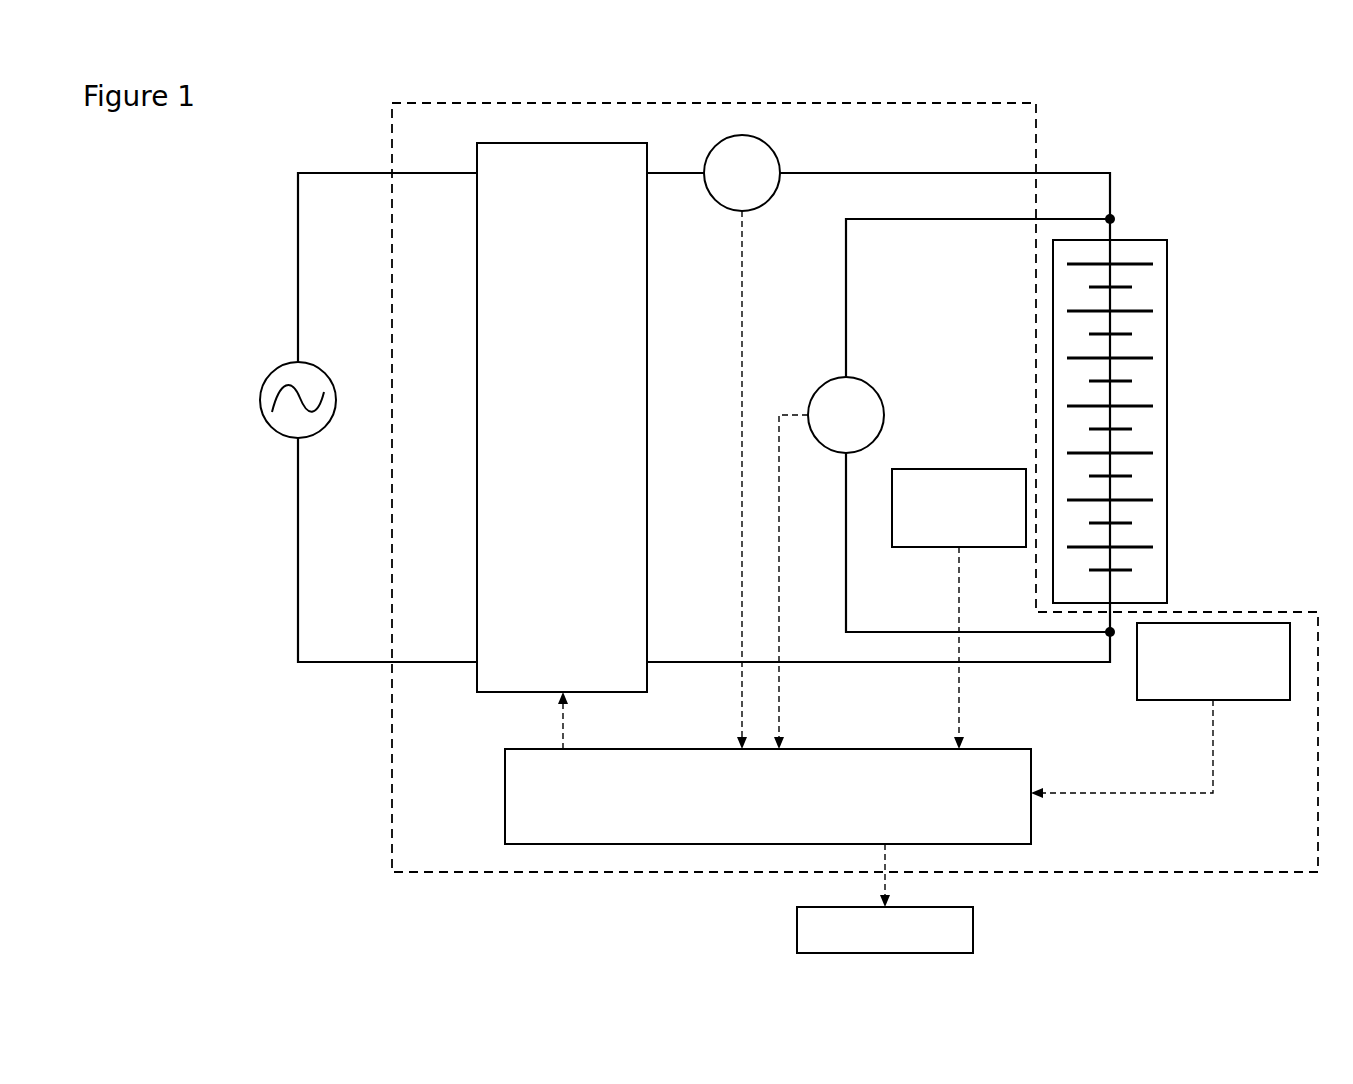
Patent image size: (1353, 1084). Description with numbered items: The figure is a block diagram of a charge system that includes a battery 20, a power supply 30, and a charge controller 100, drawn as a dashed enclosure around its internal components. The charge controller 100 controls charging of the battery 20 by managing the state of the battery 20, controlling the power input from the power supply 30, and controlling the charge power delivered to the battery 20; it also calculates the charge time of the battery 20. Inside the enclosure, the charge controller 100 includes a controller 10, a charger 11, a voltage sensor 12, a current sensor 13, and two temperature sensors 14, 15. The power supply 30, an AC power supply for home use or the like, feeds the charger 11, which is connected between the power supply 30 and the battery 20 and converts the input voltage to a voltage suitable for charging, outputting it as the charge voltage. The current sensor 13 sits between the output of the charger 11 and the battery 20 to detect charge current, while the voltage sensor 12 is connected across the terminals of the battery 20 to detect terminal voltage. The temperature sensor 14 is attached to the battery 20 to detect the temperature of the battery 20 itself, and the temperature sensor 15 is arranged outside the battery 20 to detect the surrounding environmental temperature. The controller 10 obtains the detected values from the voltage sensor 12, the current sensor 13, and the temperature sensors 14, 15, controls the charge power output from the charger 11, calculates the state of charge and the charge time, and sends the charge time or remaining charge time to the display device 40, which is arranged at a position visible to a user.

The charge controller 100 is at (1038, 103).
The controller 10 is at (1031, 762).
The charger 11 is at (577, 143).
The voltage sensor 12 is at (826, 384).
The current sensor 13 is at (745, 136).
The temperature sensor 14 is at (961, 469).
The temperature sensor 15 is at (1245, 623).
The battery 20 is at (1167, 250).
The power supply 30 is at (278, 368).
The display device 40 is at (973, 928).